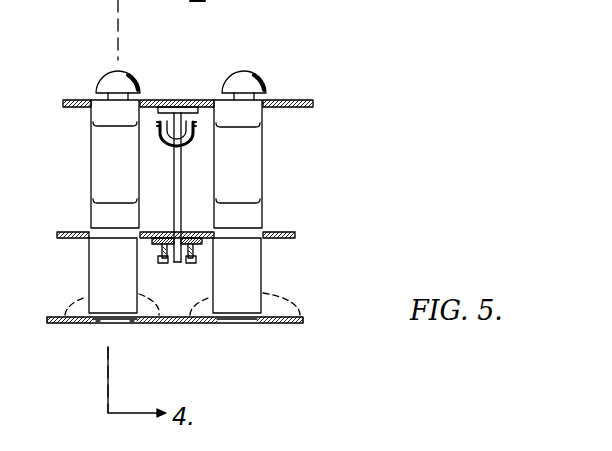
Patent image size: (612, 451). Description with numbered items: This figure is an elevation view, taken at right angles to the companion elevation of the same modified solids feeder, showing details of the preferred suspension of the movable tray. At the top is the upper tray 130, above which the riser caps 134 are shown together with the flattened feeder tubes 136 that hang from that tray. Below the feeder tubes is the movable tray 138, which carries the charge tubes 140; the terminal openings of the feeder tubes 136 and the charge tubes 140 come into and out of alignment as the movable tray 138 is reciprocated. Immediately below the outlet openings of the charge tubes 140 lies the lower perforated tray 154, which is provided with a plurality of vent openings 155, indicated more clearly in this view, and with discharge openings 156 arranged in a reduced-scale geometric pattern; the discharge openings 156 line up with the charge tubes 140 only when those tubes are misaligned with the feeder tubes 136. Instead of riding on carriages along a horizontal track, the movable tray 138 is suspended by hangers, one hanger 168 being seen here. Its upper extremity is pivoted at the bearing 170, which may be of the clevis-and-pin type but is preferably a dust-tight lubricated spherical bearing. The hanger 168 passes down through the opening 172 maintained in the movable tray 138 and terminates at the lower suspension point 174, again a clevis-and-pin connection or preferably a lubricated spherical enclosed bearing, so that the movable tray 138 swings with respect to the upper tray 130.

The upper tray 130 is at (300, 104).
The riser caps 134 is at (122, 72).
The feeder tubes 136 is at (228, 185).
The movable tray 138 is at (278, 233).
The charge tubes 140 is at (230, 296).
The lower perforated tray 154 is at (185, 327).
The vent openings 155 is at (134, 292).
The discharge openings 156 is at (112, 325).
The hanger 168 is at (172, 163).
The bearing 170 is at (205, 80).
The opening 172 is at (165, 232).
The lower suspension point 174 is at (175, 266).